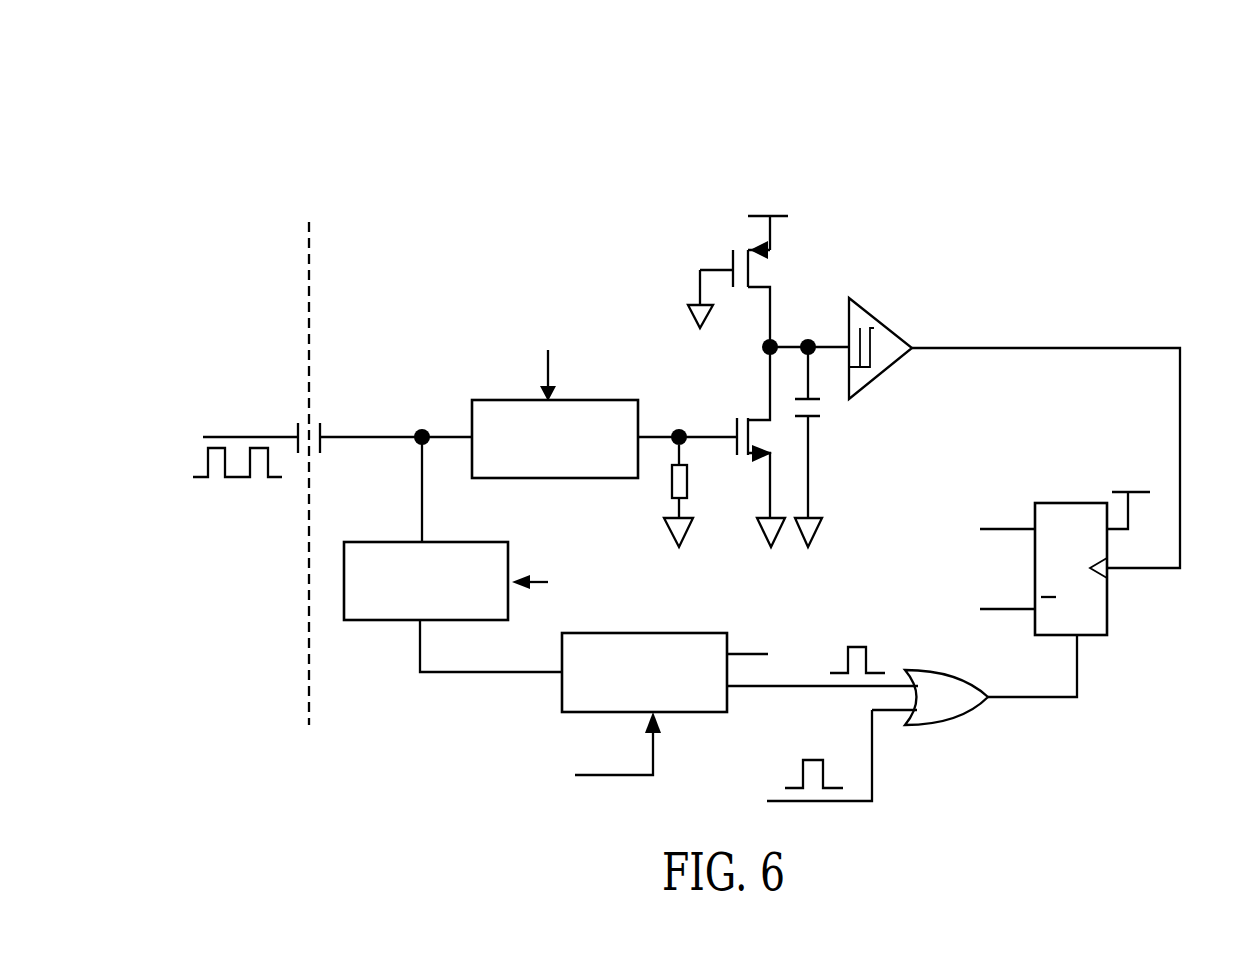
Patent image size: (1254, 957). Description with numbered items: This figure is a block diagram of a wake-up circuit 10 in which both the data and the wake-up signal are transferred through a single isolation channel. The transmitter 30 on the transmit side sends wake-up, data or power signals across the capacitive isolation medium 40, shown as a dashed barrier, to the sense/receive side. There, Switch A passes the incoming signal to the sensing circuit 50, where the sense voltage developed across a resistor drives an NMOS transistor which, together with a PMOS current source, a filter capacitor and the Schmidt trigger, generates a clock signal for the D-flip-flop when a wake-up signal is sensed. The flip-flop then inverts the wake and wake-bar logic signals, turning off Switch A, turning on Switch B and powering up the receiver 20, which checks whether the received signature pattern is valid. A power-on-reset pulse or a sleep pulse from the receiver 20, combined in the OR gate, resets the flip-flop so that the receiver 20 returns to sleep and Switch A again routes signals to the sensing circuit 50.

The wake-up circuit 10 is at (1122, 122).
The receiver 20 is at (1122, 724).
The transmitter 30 is at (201, 190).
The isolation medium 40 is at (309, 210).
The sensing circuit 50 is at (554, 195).